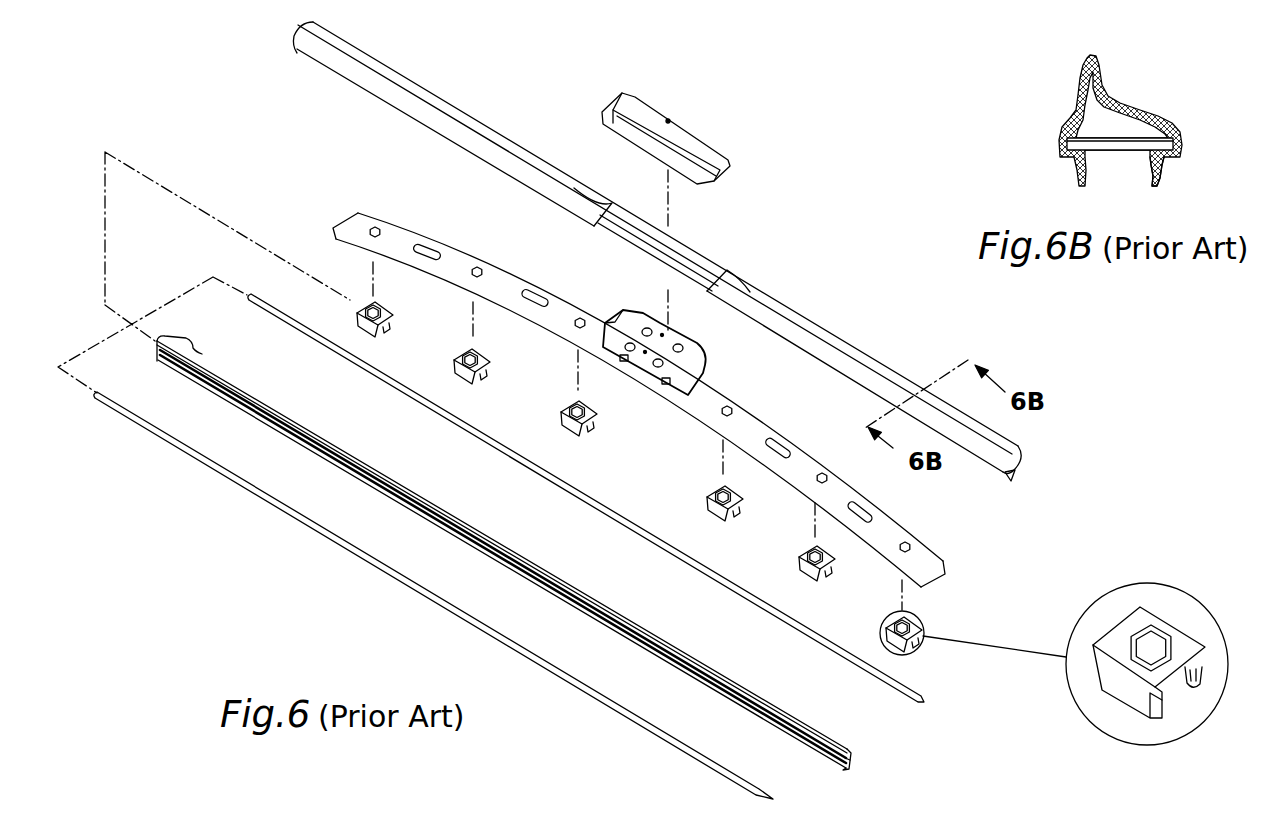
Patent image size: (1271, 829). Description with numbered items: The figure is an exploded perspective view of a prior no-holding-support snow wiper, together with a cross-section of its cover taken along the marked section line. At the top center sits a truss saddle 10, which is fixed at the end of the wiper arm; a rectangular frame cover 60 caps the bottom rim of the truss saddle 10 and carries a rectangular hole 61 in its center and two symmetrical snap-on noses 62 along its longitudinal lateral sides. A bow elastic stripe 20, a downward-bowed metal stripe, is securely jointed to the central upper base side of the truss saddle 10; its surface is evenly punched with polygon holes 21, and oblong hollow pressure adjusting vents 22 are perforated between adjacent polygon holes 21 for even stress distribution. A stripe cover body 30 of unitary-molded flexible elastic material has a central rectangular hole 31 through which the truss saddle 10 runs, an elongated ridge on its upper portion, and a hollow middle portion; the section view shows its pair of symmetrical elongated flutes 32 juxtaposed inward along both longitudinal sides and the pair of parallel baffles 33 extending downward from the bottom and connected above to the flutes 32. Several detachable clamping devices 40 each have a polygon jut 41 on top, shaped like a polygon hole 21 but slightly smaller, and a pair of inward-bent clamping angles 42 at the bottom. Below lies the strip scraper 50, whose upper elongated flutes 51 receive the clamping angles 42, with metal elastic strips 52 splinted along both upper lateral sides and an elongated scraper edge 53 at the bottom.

In FIG. 6, the truss saddle 10 is at (624, 317).
In FIG. 6, the bow elastic stripe 20 is at (705, 392).
In FIG. 6, the polygon holes 21 is at (384, 226).
In FIG. 6, the oblong hollow pressure adjusting vents 22 is at (867, 513).
In FIG. 6, the stripe cover body 30 is at (843, 360).
In FIG. 6B, the stripe cover body 30 is at (1088, 92).
In FIG. 6, the central rectangular hole 31 is at (687, 263).
In FIG. 6B, the elongated flutes 32 is at (1062, 143).
In FIG. 6, the baffles 33 is at (1015, 462).
In FIG. 6B, the baffles 33 is at (1165, 168).
In FIG. 6, the detachable clamping devices 40 is at (1054, 675).
In FIG. 6, the polygon jut 41 is at (1153, 637).
In FIG. 6, the clamping angles 42 is at (1192, 684).
In FIG. 6, the strip scraper 50 is at (528, 475).
In FIG. 6, the elongated flutes 51 is at (787, 738).
In FIG. 6, the metal elastic strips 52 is at (922, 697).
In FIG. 6, the elongated scraper edge 53 is at (847, 761).
In FIG. 6, the rectangular frame cover 60 is at (682, 131).
In FIG. 6, the rectangular hole 61 is at (612, 106).
In FIG. 6, the snap-on noses 62 is at (670, 121).